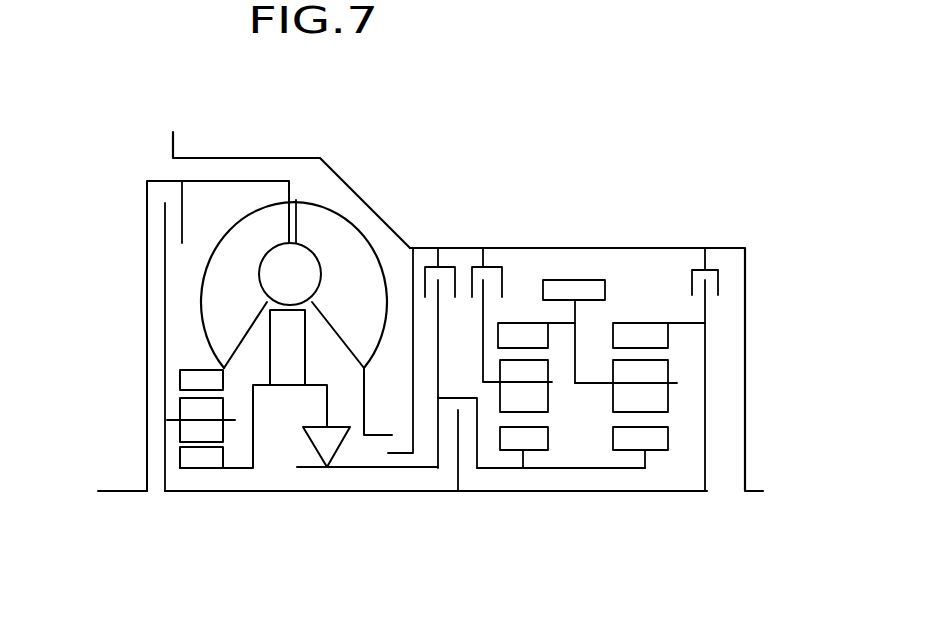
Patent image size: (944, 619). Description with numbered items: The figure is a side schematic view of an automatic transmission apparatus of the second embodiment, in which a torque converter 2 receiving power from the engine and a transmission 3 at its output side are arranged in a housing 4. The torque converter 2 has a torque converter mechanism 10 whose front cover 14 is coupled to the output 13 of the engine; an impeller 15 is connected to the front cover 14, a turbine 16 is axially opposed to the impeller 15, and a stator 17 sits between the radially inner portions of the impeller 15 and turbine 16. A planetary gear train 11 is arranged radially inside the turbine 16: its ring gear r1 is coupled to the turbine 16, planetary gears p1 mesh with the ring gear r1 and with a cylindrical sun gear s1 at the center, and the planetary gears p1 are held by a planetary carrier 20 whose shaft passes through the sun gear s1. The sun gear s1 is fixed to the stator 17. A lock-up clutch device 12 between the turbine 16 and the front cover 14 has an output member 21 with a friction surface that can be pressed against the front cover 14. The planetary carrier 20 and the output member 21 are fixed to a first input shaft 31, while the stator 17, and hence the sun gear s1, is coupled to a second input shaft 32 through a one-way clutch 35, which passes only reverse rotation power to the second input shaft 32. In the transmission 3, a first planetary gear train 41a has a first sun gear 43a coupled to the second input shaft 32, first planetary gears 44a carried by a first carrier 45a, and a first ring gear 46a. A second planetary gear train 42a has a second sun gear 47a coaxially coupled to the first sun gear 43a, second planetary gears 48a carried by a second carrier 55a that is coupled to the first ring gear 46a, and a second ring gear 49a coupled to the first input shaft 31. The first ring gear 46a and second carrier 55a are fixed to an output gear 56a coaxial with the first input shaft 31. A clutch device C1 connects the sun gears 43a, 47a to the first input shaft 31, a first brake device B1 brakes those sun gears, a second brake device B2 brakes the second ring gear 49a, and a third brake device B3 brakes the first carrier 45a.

The torque converter 2 is at (372, 168).
The transmission 3 is at (600, 238).
The housing 4 is at (323, 158).
The torque converter mechanism 10 is at (360, 235).
The planetary gear train 11 is at (200, 474).
The lock-up clutch device 12 is at (150, 210).
The output of the engine 13 is at (120, 487).
The front cover 14 is at (145, 185).
The impeller 15 is at (352, 348).
The turbine 16 is at (241, 314).
The stator 17 is at (290, 274).
The planetary carrier 20 is at (165, 427).
The output member 21 is at (158, 373).
The ring gear r1 is at (205, 377).
The planetary gears p1 is at (203, 433).
The sun gear s1 is at (183, 463).
The first input shaft 31 is at (327, 490).
The second input shaft 32 is at (353, 470).
The one-way clutch 35 is at (317, 443).
The first planetary gear train 41a is at (509, 459).
The second planetary gear train 42a is at (630, 461).
The first sun gear 43a is at (535, 402).
The first planetary gears 44a is at (523, 438).
The first carrier 45a is at (500, 412).
The first ring gear 46a is at (508, 330).
The second sun gear 47a is at (653, 438).
The second planetary gears 48a is at (658, 397).
The second ring gear 49a is at (630, 330).
The second carrier 55a is at (580, 387).
The output gear 56a is at (570, 285).
The first brake device B1 is at (458, 265).
The second brake device B2 is at (695, 270).
The third brake device B3 is at (497, 265).
The clutch device C1 is at (457, 452).